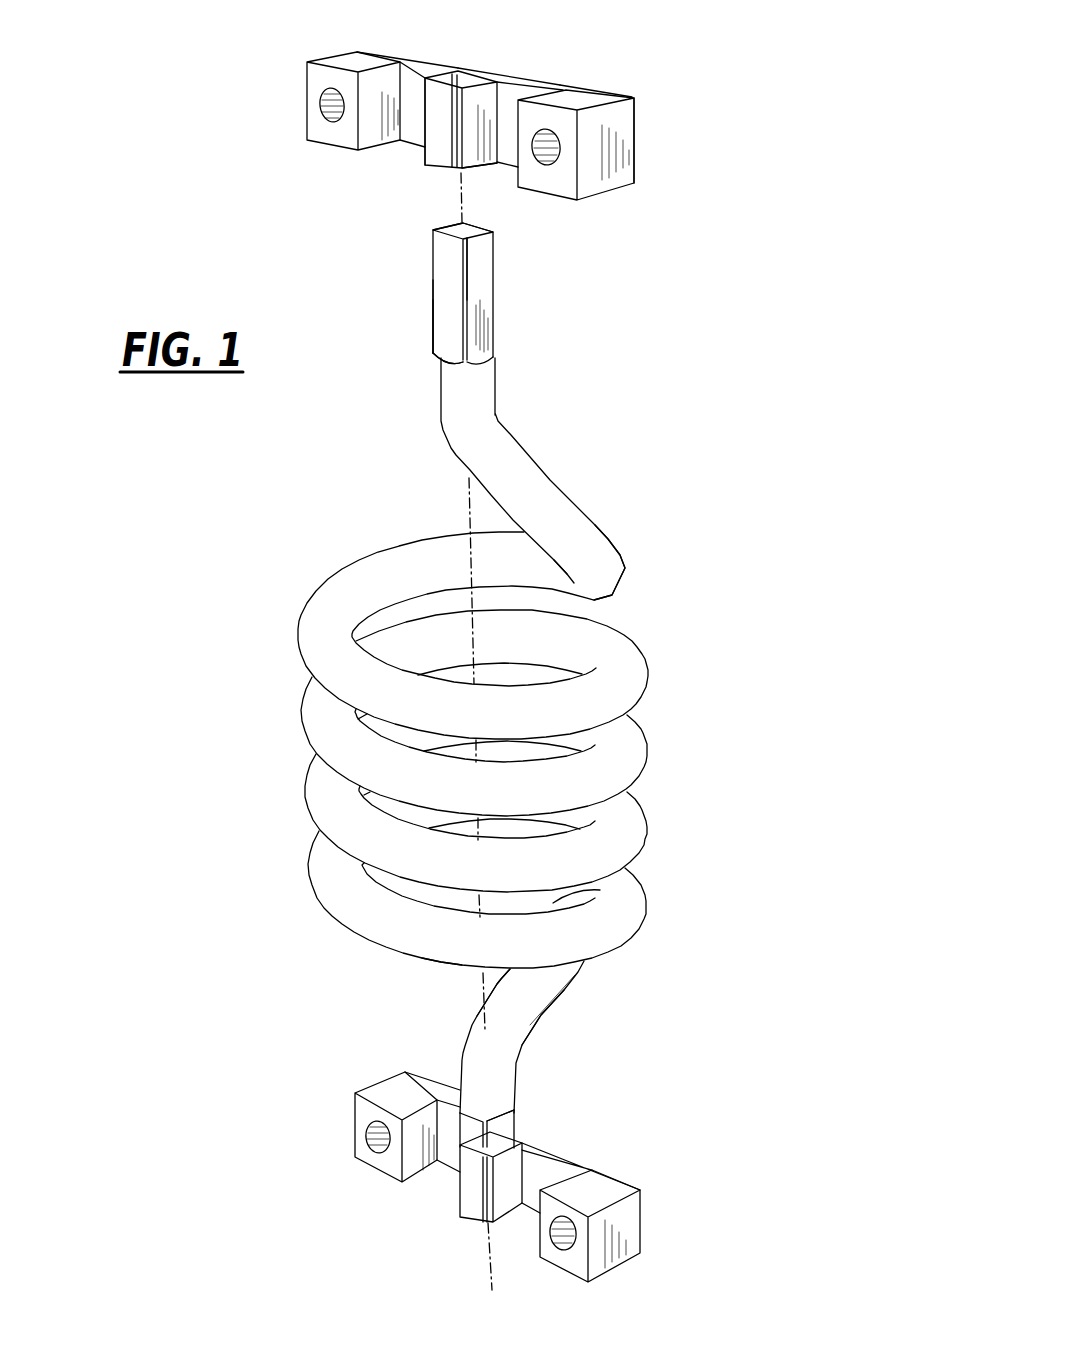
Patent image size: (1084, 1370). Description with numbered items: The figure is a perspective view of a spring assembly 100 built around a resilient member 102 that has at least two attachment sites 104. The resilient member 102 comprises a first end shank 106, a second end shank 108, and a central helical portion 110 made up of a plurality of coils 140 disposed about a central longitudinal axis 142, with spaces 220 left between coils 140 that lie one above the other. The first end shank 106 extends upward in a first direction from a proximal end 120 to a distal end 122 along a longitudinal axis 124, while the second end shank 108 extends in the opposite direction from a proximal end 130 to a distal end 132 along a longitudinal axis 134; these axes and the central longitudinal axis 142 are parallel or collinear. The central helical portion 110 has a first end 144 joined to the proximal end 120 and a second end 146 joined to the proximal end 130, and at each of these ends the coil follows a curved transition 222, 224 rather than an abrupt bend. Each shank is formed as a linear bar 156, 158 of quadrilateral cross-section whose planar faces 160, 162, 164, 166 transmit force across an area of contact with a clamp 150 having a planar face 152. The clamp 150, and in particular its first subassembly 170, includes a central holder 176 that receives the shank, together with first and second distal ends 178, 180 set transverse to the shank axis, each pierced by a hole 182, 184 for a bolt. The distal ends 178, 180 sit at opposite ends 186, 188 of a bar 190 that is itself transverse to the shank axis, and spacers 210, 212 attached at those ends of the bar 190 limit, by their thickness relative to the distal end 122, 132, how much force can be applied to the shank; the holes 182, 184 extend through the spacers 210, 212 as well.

The spring assembly 100 is at (192, 514).
The resilient member 102 is at (658, 777).
The attachment site 104 is at (641, 128).
The first end shank 106 is at (478, 329).
The second end shank 108 is at (499, 1076).
The central helical portion 110 is at (302, 771).
The proximal end 120 is at (445, 338).
The distal end 122 is at (435, 253).
The longitudinal axis 124 is at (460, 188).
The proximal end 130 is at (497, 991).
The distal end 132 is at (478, 1194).
The longitudinal axis 134 is at (492, 1251).
The coil 140 is at (633, 835).
The central longitudinal axis 142 is at (470, 506).
The first end 144 is at (573, 530).
The second end 146 is at (536, 1006).
The clamp 150 is at (491, 65).
The planar face 152 is at (413, 116).
The linear bar 156 is at (430, 294).
The linear bar 158 is at (461, 1185).
The face 160 is at (445, 311).
The face 162 is at (481, 289).
The face 164 is at (470, 1136).
The face 166 is at (511, 1121).
The first subassembly 170 is at (522, 79).
The central holder 176 is at (490, 168).
The first distal end 178 is at (369, 43).
The second distal end 180 is at (629, 97).
The hole 182 is at (330, 110).
The hole 184 is at (551, 161).
The end of bar 186 is at (379, 51).
The end of bar 188 is at (609, 96).
The bar 190 is at (417, 141).
The spacer 210 is at (325, 76).
The spacer 212 is at (607, 176).
The space 220 is at (527, 903).
The curved transition 222 is at (629, 453).
The curved transition 224 is at (414, 985).